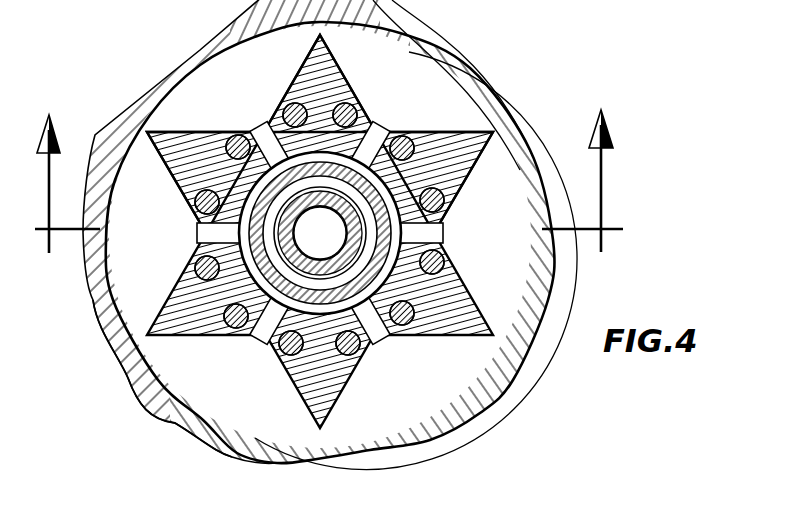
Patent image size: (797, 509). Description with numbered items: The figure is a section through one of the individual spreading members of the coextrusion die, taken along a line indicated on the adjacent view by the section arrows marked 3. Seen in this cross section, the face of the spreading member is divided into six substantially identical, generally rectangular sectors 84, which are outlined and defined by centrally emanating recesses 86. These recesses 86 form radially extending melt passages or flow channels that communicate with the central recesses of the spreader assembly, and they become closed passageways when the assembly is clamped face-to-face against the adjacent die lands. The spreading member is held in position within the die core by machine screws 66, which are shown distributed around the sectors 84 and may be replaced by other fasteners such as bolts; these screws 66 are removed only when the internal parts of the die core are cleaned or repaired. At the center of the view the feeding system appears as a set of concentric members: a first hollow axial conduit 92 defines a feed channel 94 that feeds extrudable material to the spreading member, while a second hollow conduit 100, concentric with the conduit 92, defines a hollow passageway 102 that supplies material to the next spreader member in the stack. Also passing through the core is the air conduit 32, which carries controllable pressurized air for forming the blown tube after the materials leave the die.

The air conduit 32 is at (356, 99).
The machine screws 66 is at (379, 226).
The sectors 84 is at (177, 131).
The recesses 86 is at (264, 300).
The first hollow axial conduit 92 is at (320, 233).
The feed channel 94 is at (485, 170).
The second hollow conduit 100 is at (352, 302).
The hollow passageway 102 is at (368, 322).
The section line 3- 3 is at (329, 209).